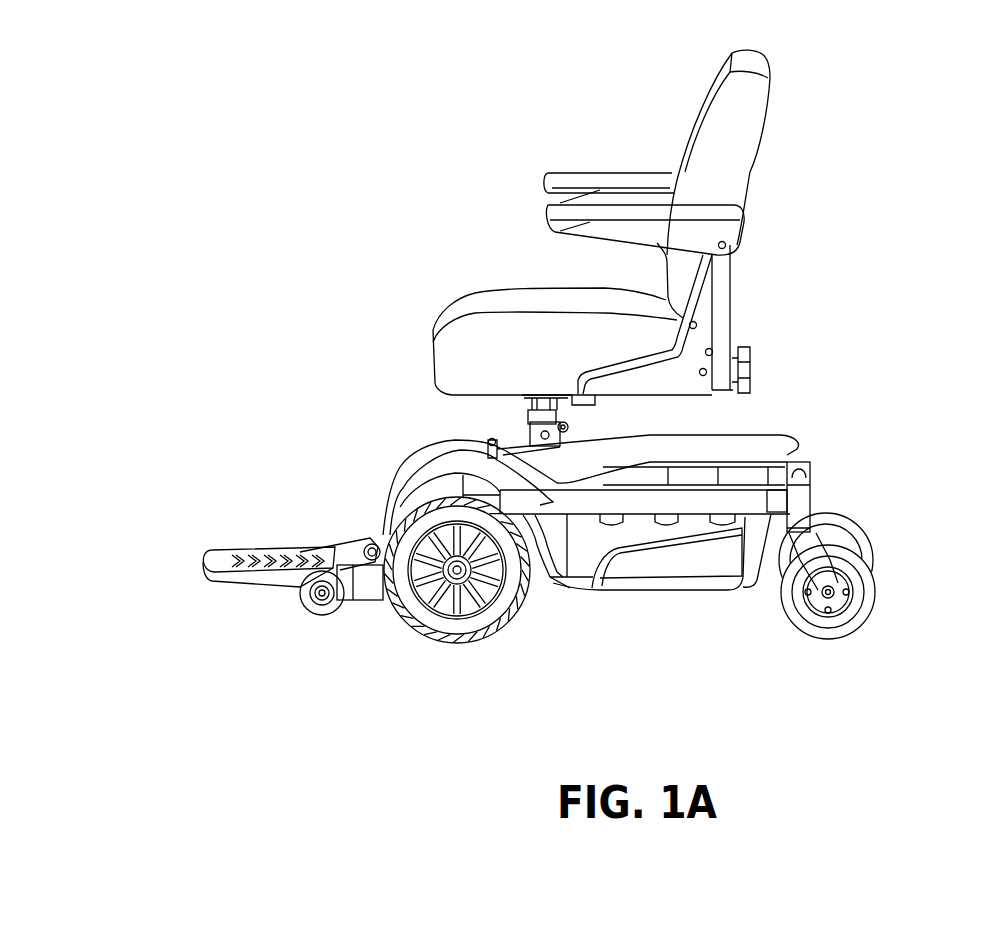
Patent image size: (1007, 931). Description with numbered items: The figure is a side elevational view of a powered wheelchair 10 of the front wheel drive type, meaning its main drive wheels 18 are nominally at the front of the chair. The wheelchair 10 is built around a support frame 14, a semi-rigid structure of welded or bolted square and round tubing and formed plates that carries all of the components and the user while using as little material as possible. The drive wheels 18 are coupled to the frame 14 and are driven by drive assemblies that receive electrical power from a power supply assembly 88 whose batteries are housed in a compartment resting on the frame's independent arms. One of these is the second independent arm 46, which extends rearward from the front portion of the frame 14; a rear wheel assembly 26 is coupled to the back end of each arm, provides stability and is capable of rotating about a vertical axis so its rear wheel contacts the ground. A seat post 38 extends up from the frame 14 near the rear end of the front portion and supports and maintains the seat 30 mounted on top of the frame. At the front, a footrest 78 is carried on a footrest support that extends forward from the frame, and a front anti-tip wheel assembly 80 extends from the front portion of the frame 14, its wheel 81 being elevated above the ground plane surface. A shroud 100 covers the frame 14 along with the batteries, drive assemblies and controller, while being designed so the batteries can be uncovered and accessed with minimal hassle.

The powered wheelchair 10 is at (340, 370).
The seat 30 is at (728, 180).
The seat post 38 is at (535, 415).
The shroud 100 is at (766, 416).
The support frame 14 is at (798, 510).
The rear wheel assembly 26 is at (830, 583).
The second independent arm 46 is at (693, 503).
The power supply assembly 88 is at (647, 600).
The drive wheels 18 is at (499, 607).
The front anti-tip wheel assembly 80 is at (365, 593).
The wheel 81 is at (305, 602).
The footrest 78 is at (248, 555).